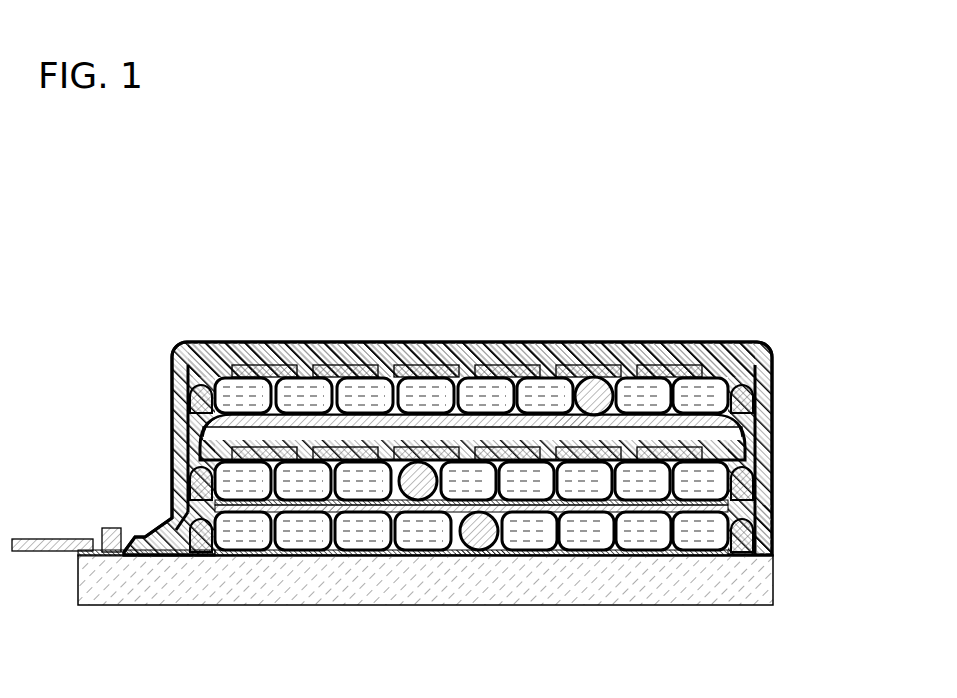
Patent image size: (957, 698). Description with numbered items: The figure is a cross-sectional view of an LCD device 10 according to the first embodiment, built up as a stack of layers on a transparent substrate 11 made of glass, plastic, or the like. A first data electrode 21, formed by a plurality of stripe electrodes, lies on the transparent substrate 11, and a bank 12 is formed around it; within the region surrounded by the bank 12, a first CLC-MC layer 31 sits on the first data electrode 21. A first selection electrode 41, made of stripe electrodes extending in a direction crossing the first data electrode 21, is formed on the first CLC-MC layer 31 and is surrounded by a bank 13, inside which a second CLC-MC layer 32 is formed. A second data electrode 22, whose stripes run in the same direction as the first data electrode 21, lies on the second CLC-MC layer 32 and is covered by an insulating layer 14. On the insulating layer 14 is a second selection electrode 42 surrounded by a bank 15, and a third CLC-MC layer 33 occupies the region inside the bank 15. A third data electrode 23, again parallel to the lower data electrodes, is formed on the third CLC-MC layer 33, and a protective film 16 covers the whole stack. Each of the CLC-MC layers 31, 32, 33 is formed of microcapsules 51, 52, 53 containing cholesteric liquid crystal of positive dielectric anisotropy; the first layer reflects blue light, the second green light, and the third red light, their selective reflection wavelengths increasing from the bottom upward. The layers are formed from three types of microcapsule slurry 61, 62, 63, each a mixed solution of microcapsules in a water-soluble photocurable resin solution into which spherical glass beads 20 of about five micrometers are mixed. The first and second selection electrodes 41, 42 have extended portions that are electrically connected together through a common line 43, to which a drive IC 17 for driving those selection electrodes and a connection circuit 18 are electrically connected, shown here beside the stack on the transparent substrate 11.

The LCD device 10 is at (441, 222).
The transparent substrate 11 is at (90, 578).
The bank 12 is at (190, 553).
The bank 13 is at (237, 457).
The insulating layer 14 is at (745, 447).
The bank 15 is at (200, 398).
The protective film 16 is at (332, 356).
The drive IC 17 is at (108, 528).
The connection circuit 18 is at (50, 541).
The spherical glass beads 20 is at (592, 385).
The first data electrode 21 is at (255, 556).
The second data electrode 22 is at (230, 442).
The third data electrode 23 is at (262, 365).
The first CLC-MC layer 31 is at (748, 548).
The second CLC-MC layer 32 is at (745, 472).
The third CLC-MC layer 33 is at (760, 350).
The first selection electrode 41 is at (750, 512).
The second selection electrode 42 is at (740, 418).
The common line 43 is at (128, 557).
The microcapsule 51 is at (588, 535).
The microcapsule 52 is at (643, 486).
The microcapsule 53 is at (692, 400).
The microcapsule slurry 61 is at (462, 551).
The microcapsule slurry 62 is at (334, 507).
The microcapsule slurry 63 is at (571, 415).